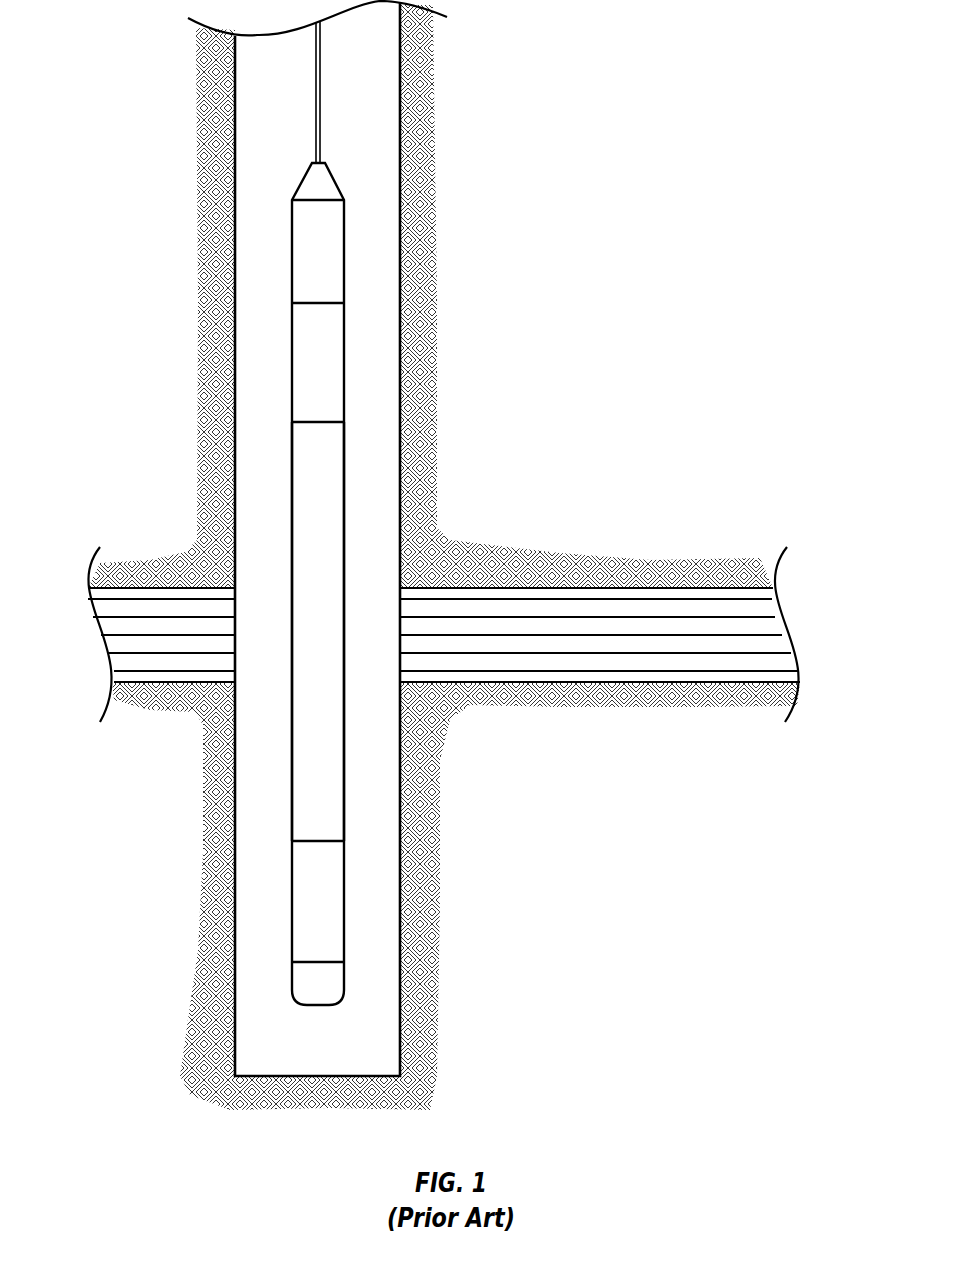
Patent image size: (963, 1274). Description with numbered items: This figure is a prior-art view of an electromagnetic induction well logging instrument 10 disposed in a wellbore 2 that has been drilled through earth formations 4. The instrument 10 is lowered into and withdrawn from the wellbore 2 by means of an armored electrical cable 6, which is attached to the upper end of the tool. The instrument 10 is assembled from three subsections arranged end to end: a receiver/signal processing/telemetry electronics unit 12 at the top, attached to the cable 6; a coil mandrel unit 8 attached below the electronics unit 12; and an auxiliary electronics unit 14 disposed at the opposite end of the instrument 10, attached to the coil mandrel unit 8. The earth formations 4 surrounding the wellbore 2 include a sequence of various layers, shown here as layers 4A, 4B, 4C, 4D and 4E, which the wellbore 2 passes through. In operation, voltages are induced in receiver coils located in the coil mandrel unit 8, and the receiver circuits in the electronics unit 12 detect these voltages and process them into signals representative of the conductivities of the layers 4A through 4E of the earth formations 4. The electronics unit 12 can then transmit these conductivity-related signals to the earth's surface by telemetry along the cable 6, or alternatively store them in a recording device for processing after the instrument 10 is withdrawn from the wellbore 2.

The wellbore 2 is at (377, 123).
The earth formations 4 is at (451, 634).
The layer of the earth formations 4A is at (766, 593).
The layer of the earth formations 4B is at (767, 611).
The layer of the earth formations 4C is at (783, 644).
The layer of the earth formations 4D is at (786, 657).
The layer of the earth formations 4E is at (789, 676).
The armored electrical cable 6 is at (316, 98).
The coil mandrel unit 8 is at (306, 595).
The electromagnetic induction well logging instrument 10 is at (365, 513).
The receiver/signal processing/telemetry electronics unit 12 is at (307, 356).
The auxiliary electronics unit 14 is at (308, 906).